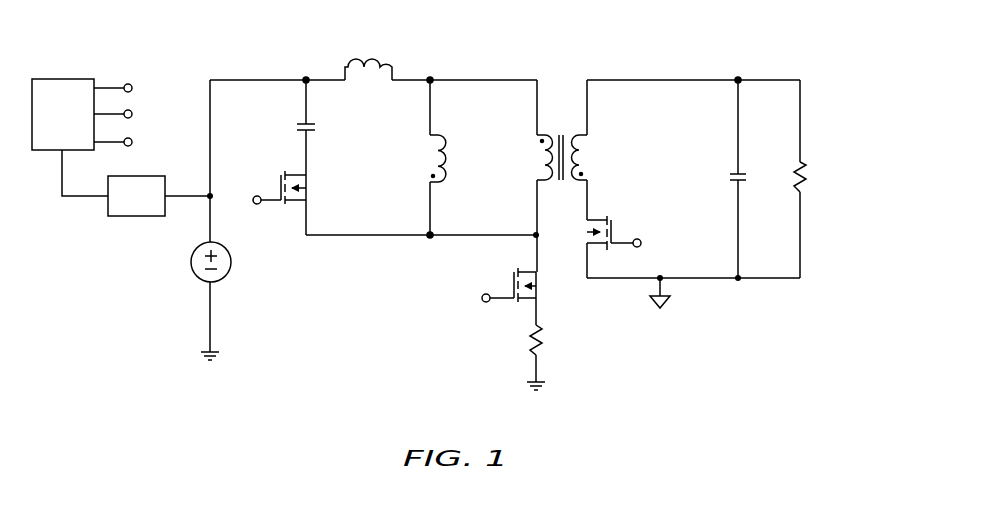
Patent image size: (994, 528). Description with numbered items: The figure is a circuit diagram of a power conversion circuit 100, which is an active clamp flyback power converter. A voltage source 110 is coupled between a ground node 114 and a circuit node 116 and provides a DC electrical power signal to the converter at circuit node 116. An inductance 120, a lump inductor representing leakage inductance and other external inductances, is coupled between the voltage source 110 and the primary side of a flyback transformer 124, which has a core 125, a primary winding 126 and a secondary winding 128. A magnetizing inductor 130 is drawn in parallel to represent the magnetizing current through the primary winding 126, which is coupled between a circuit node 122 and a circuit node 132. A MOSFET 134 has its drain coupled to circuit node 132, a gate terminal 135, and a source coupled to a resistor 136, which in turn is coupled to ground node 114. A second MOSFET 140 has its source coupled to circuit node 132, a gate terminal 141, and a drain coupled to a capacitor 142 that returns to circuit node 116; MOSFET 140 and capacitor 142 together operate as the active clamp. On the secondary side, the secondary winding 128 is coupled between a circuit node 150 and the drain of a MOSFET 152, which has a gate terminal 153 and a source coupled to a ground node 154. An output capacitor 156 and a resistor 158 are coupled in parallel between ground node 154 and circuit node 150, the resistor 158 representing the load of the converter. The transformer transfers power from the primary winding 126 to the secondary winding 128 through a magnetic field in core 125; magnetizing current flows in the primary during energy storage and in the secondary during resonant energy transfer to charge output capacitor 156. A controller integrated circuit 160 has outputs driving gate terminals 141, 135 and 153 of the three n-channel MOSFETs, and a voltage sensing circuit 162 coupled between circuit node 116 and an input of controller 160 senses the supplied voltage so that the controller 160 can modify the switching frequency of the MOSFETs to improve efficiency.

The power conversion circuit 100 is at (860, 60).
The voltage source 110 is at (191, 262).
The ground node 114 is at (202, 352).
The circuit node 116 is at (306, 78).
The inductance 120 is at (368, 61).
The circuit node 122 is at (431, 78).
The flyback transformer 124 is at (564, 128).
The core 125 is at (565, 182).
The primary winding 126 is at (546, 155).
The secondary winding 128 is at (577, 155).
The magnetizing inductor 130 is at (436, 152).
The circuit node 132 is at (430, 240).
The MOSFET 134 is at (512, 283).
The gate terminal 135 is at (133, 87).
The resistor 136 is at (545, 342).
The MOSFET 140 is at (280, 186).
The gate terminal 141 is at (133, 113).
The capacitor 142 is at (296, 128).
The circuit node 150 is at (738, 78).
The MOSFET 152 is at (613, 232).
The gate terminal 153 is at (133, 141).
The ground node 154 is at (668, 305).
The output capacitor 156 is at (730, 176).
The resistor 158 is at (808, 170).
The controller integrated circuit 160 is at (82, 137).
The voltage sensing circuit 162 is at (159, 196).